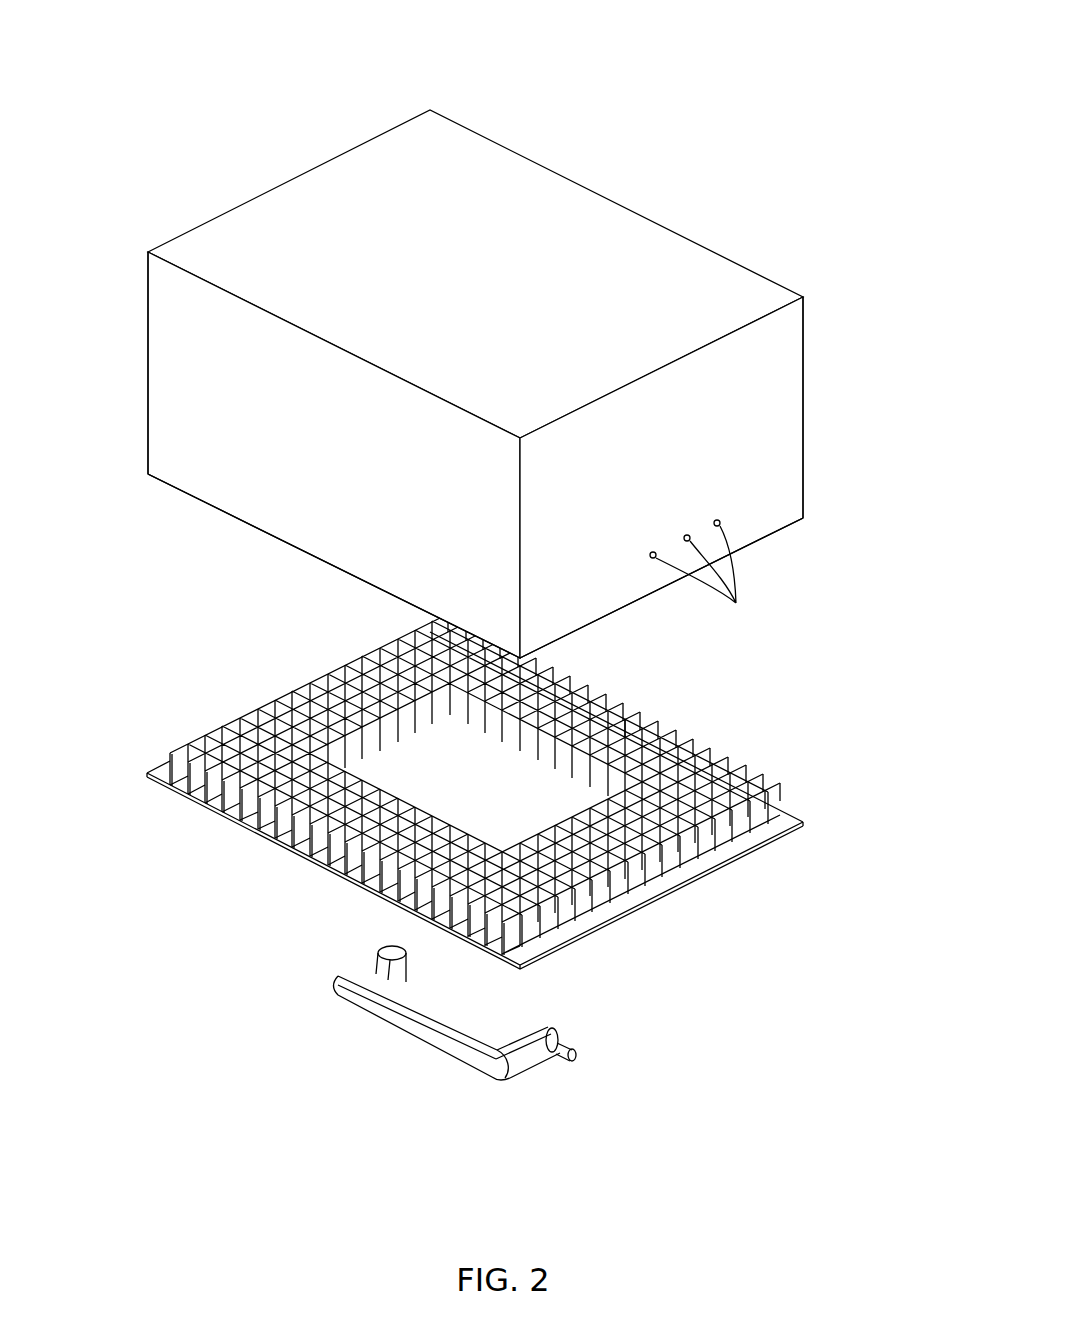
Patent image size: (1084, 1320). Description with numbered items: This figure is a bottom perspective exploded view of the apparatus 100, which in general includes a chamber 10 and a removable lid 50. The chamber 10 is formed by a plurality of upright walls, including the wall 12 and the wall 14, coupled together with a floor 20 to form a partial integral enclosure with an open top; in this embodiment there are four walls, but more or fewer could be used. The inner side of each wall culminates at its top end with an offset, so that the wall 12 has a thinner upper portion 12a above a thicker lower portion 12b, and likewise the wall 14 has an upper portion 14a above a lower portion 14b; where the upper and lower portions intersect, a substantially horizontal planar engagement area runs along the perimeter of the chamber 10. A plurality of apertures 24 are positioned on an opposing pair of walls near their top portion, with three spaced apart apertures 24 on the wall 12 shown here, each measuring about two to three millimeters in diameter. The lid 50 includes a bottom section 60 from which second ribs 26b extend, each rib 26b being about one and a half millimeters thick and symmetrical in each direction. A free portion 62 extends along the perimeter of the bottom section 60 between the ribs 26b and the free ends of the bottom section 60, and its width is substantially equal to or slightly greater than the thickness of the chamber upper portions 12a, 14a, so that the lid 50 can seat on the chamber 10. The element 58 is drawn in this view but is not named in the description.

The apparatus 100 is at (499, 551).
The chamber 10 is at (484, 372).
The upright wall 12 is at (658, 464).
The upper portion of wall 12a is at (781, 520).
The lower portion of wall 12b is at (793, 347).
The upright wall 14 is at (318, 430).
The upper portion of wall 14a is at (208, 493).
The lower portion of wall 14b is at (175, 313).
The floor 20 is at (493, 157).
The apertures 24 is at (709, 576).
The second ribs 26b is at (625, 885).
The removable lid 50 is at (501, 791).
The heat pipe 58 is at (435, 1040).
The bottom section 60 is at (277, 828).
The free portion 62 is at (790, 836).